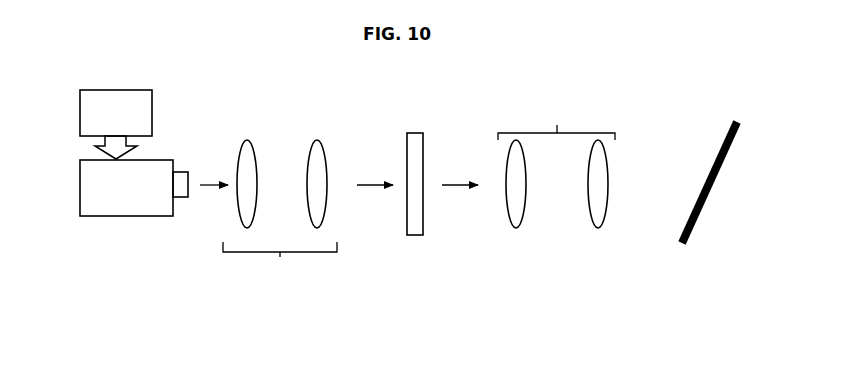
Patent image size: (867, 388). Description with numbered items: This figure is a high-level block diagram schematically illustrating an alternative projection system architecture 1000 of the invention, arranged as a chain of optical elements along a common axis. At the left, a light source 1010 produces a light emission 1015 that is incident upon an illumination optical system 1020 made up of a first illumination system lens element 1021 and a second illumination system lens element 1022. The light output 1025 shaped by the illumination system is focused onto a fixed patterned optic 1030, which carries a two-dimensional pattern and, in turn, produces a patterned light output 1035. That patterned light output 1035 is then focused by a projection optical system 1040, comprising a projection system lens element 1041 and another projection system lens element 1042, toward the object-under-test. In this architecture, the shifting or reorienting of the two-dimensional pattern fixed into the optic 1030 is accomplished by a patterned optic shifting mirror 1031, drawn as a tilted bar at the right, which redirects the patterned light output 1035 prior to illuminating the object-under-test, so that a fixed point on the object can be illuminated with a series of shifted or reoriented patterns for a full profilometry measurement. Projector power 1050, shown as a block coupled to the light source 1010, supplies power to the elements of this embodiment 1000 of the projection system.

The third projection system architecture 1000 is at (174, 302).
The light source 1010 is at (143, 216).
The light output from light source 1015 is at (217, 177).
The illumination optical system 1020 is at (280, 262).
The illumination system lens element 1021 is at (240, 140).
The another illumination system lens element 1022 is at (313, 140).
The light output from light source shaped by illumination system 1025 is at (382, 183).
The fixed patterned optic 1030 is at (413, 133).
The patterned optic shifting mirror 1031 is at (713, 198).
The patterned light output 1035 is at (458, 183).
The projection optical system 1040 is at (556, 122).
The projection system lens element 1041 is at (515, 228).
The another projection system lens element 1042 is at (598, 228).
The projector power 1050 is at (132, 90).